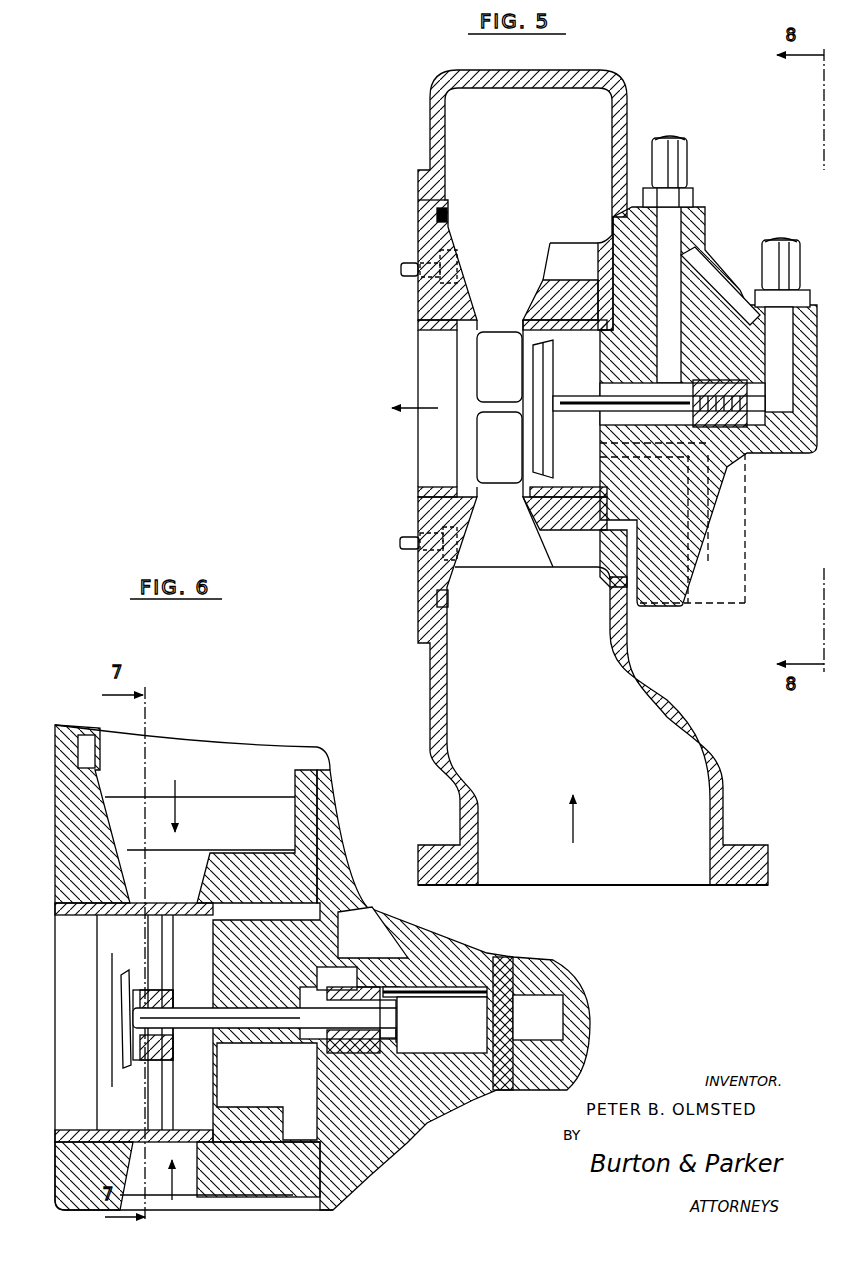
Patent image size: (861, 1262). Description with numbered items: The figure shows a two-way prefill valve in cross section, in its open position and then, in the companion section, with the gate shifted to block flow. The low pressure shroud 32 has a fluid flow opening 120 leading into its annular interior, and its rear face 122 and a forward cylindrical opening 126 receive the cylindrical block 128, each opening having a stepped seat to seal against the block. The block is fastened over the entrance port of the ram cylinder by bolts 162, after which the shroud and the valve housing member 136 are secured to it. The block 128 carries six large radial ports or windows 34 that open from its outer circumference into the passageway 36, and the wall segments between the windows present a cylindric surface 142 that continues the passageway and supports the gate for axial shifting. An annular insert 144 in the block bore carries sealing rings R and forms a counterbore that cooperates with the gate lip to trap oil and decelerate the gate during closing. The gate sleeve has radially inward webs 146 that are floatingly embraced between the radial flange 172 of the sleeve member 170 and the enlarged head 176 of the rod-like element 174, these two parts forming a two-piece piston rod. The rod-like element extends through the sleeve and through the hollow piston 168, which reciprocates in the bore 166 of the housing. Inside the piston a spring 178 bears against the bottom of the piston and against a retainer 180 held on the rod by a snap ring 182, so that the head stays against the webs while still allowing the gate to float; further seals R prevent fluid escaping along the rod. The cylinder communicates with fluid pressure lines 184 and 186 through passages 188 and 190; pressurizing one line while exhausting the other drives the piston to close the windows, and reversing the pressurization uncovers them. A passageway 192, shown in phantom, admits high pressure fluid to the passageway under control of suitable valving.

In FIG. 5, the low pressure shroud 32 is at (437, 89).
In FIG. 6, the low pressure shroud 32 is at (313, 756).
In FIG. 5, the ports or windows 34 is at (507, 335).
In FIG. 5, the passageway 36 is at (443, 465).
In FIG. 5, the fluid flow opening 120 is at (710, 853).
In FIG. 5, the rear face 122 is at (626, 160).
In FIG. 5, the cylindrical opening 126 is at (428, 598).
In FIG. 6, the cylindrical opening 126 is at (194, 1056).
In FIG. 5, the cylindrical block 128 is at (420, 231).
In FIG. 5, the valve housing member 136 is at (653, 570).
In FIG. 5, the cylindric surface 142 is at (550, 490).
In FIG. 5, the annular insert 144 is at (420, 325).
In FIG. 6, the annular insert 144 is at (72, 1130).
In FIG. 5, the webs 146 is at (552, 455).
In FIG. 6, the webs 146 is at (143, 968).
In FIG. 5, the bolts 162 is at (402, 545).
In FIG. 5, the bore 166 is at (667, 347).
In FIG. 6, the bore 166 is at (427, 993).
In FIG. 5, the piston 168 is at (743, 453).
In FIG. 6, the piston 168 is at (363, 1052).
In FIG. 5, the sleeve member 170 is at (660, 408).
In FIG. 6, the sleeve member 170 is at (247, 1033).
In FIG. 5, the radial flange 172 is at (550, 377).
In FIG. 6, the radial flange 172 is at (197, 975).
In FIG. 6, the rod-like element 174 is at (232, 1017).
In FIG. 6, the enlarged head 176 is at (120, 1015).
In FIG. 6, the spring 178 is at (370, 1052).
In FIG. 6, the retainer 180 is at (380, 992).
In FIG. 6, the snap ring 182 is at (400, 1038).
In FIG. 5, the fluid pressure line 184 is at (688, 166).
In FIG. 5, the fluid pressure line 186 is at (781, 253).
In FIG. 5, the passage 188 is at (588, 284).
In FIG. 6, the passage 188 is at (382, 950).
In FIG. 5, the passage 190 is at (788, 407).
In FIG. 6, the passage 190 is at (487, 1013).
In FIG. 5, the passageway 192 is at (708, 563).
In FIG. 6, the sealing rings R is at (153, 1008).